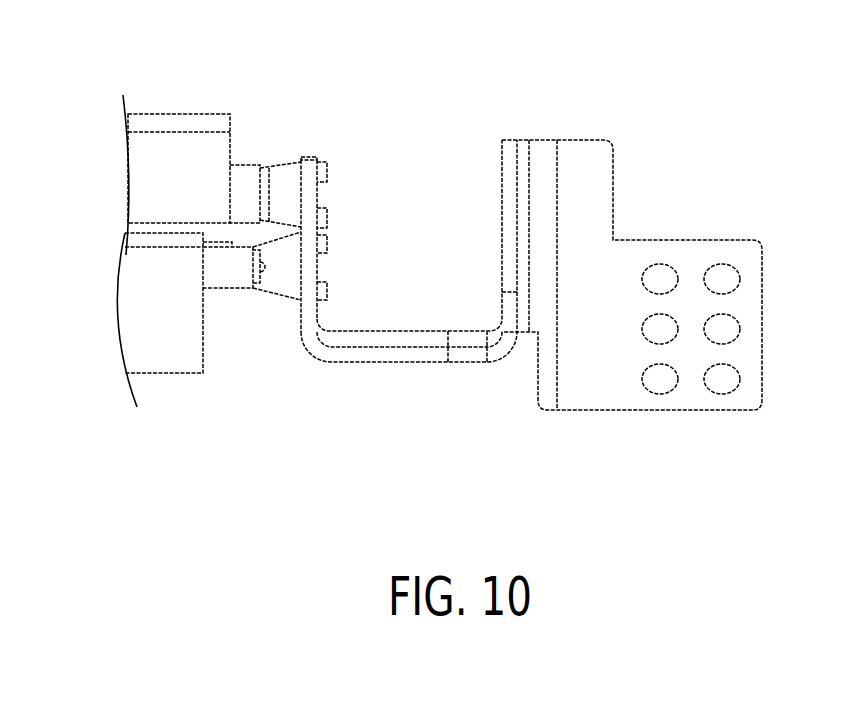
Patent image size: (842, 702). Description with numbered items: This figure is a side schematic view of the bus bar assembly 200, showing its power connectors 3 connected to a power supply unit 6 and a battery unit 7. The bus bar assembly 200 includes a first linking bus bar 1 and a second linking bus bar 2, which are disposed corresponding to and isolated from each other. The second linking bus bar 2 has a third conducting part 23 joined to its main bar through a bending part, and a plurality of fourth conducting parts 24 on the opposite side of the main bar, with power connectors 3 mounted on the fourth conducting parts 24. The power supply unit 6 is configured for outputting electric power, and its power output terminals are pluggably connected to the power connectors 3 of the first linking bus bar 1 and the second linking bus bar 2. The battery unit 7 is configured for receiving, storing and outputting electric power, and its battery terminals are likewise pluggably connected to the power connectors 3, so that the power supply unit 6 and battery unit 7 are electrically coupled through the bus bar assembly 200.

The bus bar assembly 200 is at (670, 63).
The first linking bus bar 1 is at (413, 338).
The second linking bus bar 2 is at (400, 353).
The power connector 3 is at (283, 268).
The power supply unit 6 is at (196, 156).
The battery unit 7 is at (167, 335).
The third conducting part 23 is at (688, 262).
The fourth conducting part 24 is at (307, 183).